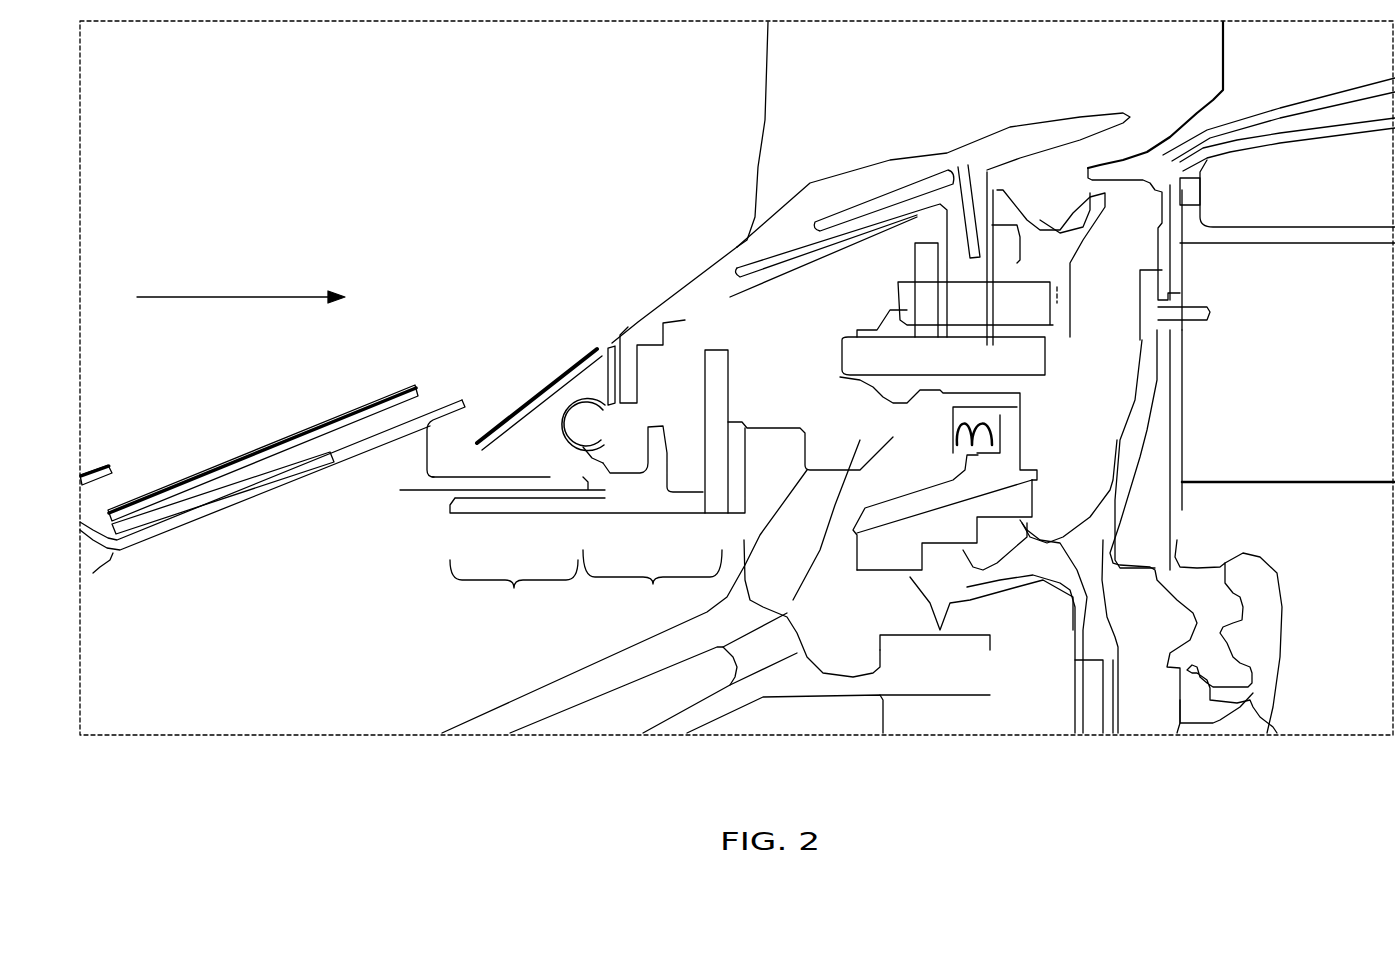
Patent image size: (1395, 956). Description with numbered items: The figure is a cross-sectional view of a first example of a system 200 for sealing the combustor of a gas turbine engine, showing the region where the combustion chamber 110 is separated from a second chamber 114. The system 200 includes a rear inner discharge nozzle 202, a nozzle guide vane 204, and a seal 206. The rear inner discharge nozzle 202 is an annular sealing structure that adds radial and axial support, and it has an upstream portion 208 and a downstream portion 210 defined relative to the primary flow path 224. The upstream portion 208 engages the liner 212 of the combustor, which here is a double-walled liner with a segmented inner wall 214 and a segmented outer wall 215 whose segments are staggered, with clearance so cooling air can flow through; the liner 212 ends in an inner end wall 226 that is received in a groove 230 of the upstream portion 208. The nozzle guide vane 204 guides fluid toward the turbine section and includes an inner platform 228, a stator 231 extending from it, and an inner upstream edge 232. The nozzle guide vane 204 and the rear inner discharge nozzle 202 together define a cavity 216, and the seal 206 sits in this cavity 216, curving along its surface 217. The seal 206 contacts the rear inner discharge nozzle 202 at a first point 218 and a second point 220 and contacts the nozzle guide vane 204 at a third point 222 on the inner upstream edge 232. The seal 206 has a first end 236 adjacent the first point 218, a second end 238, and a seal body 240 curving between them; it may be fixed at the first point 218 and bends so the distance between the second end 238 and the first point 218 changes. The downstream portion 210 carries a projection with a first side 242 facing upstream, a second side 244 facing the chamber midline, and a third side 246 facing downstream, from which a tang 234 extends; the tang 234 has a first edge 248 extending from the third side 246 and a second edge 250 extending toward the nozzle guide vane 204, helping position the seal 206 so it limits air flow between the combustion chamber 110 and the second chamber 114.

The combustion chamber 110 is at (252, 106).
The second chamber 114 is at (265, 694).
The system for sealing the combustor 200 is at (462, 218).
The rear inner discharge nozzle 202 is at (430, 490).
The nozzle guide vane 204 is at (757, 163).
The seal 206 is at (558, 414).
The upstream portion 208 is at (514, 591).
The downstream portion 210 is at (652, 586).
The liner 212 is at (150, 546).
The inner wall 214 is at (157, 487).
The outer wall 215 is at (110, 548).
The cavity 216 is at (597, 437).
The surface 217 is at (558, 437).
The first point 218 is at (580, 488).
The second point 220 is at (566, 400).
The third point 222 is at (596, 352).
The primary flow path 224 is at (233, 296).
The inner end wall 226 is at (388, 481).
The inner platform 228 is at (871, 229).
The groove 230 is at (537, 497).
The stator 231 is at (766, 181).
The inner upstream edge 232 is at (641, 333).
The tang 234 is at (712, 373).
The first end 236 is at (590, 457).
The second end 238 is at (614, 345).
The seal body 240 is at (560, 420).
The first side 242 is at (667, 457).
The second side 244 is at (645, 445).
The third side 246 is at (687, 492).
The first edge 248 is at (747, 548).
The second edge 250 is at (707, 457).